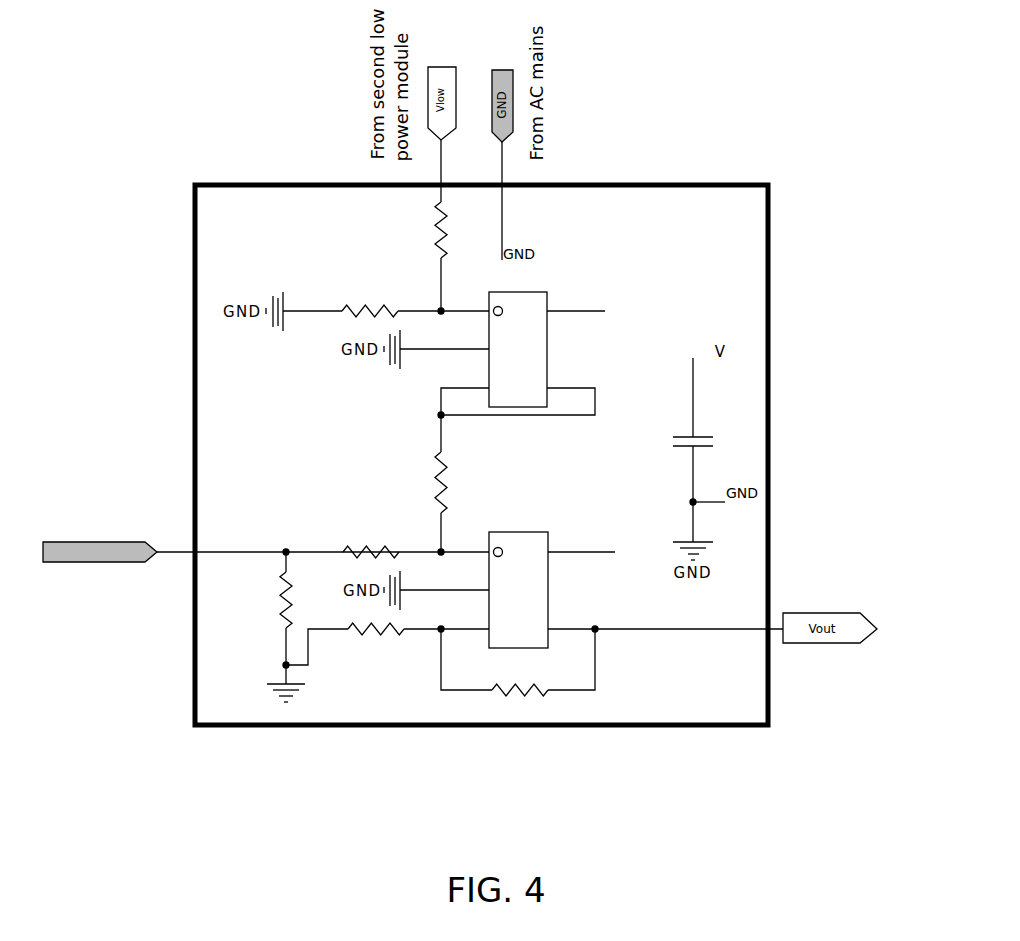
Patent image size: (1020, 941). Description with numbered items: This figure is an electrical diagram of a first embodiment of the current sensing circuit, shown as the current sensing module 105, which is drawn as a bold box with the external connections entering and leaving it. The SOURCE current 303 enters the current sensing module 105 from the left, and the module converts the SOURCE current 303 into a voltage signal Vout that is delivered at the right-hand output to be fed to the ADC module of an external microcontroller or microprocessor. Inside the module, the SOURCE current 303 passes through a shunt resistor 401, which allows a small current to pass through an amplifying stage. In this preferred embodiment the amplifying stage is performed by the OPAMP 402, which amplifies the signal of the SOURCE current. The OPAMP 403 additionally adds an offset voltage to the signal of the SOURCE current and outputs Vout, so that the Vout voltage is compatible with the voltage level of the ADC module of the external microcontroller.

The current sensing module 105 is at (687, 742).
The SOURCE current 303 is at (88, 523).
The shunt resistor 401 is at (301, 606).
The OPAMP 402 is at (562, 532).
The OPAMP 403 is at (562, 333).